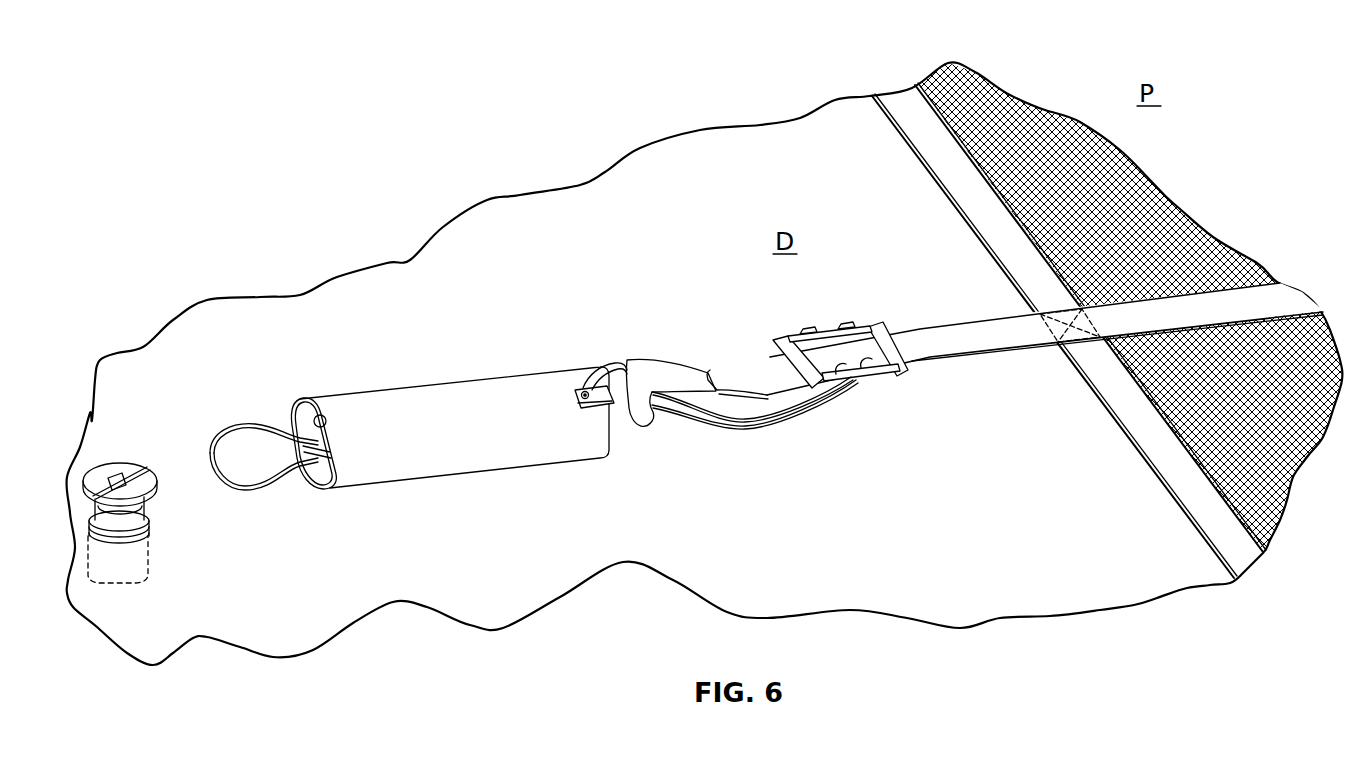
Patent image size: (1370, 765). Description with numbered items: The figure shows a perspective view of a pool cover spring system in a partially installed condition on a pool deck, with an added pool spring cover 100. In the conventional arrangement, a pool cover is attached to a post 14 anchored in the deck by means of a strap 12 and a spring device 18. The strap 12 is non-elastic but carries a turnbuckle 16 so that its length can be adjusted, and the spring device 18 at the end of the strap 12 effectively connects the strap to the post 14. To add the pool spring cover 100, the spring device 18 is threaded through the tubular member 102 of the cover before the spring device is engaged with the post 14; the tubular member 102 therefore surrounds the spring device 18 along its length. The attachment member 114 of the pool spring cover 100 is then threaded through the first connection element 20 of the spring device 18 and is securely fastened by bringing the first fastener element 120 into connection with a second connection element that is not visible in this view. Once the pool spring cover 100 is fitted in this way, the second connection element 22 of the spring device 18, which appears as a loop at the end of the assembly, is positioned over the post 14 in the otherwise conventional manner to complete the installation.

The strap 12 is at (944, 326).
The post 14 is at (125, 468).
The turnbuckle 16 is at (879, 376).
The spring device 18 is at (289, 420).
The first connection element 20 is at (638, 430).
The second connection element 22 is at (268, 486).
The pool spring cover 100 is at (398, 368).
The tubular member 102 is at (486, 383).
The attachment member 114 is at (622, 367).
The first fastener element 120 is at (585, 383).